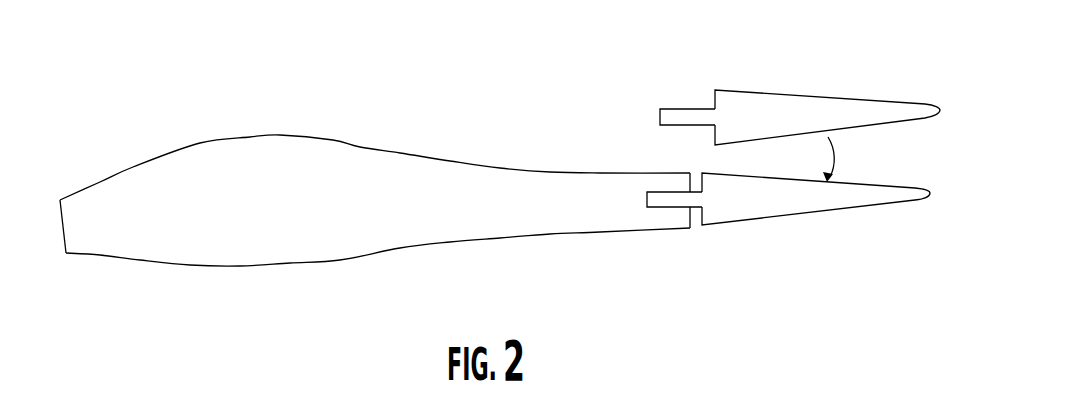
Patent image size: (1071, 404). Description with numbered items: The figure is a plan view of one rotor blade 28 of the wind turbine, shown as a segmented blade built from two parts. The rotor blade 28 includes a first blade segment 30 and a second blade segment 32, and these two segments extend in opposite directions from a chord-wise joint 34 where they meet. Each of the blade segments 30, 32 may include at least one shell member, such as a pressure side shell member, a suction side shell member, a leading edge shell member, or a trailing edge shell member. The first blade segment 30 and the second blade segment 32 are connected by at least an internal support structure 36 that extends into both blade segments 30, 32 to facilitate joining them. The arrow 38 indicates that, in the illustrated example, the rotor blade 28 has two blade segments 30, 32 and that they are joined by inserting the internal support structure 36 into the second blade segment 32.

The rotor blade 28 is at (90, 80).
The first blade segment 30 is at (830, 207).
The second blade segment 32 is at (161, 252).
The chord-wise joint 34 is at (697, 222).
The internal support structure 36 is at (678, 112).
The arrow 38 is at (833, 147).